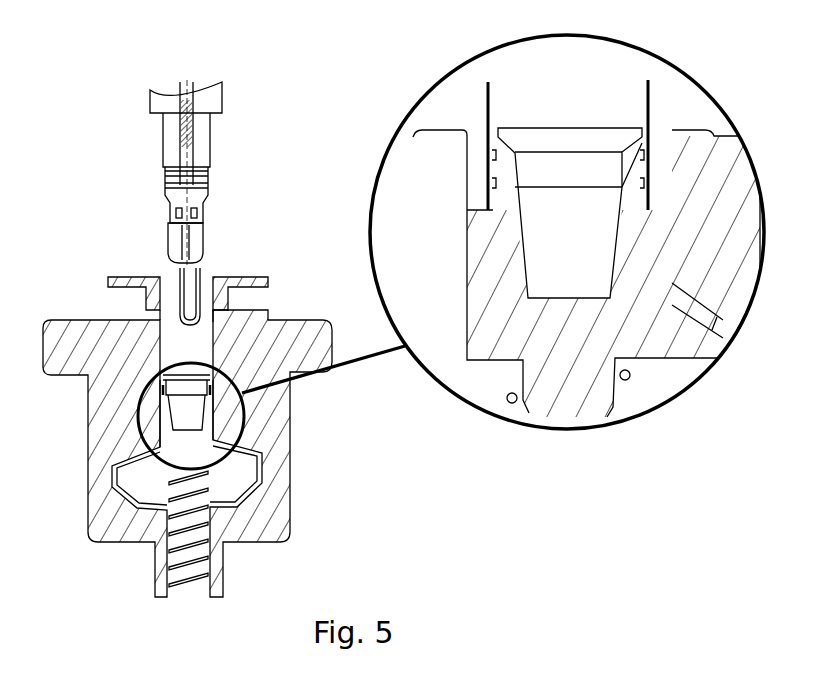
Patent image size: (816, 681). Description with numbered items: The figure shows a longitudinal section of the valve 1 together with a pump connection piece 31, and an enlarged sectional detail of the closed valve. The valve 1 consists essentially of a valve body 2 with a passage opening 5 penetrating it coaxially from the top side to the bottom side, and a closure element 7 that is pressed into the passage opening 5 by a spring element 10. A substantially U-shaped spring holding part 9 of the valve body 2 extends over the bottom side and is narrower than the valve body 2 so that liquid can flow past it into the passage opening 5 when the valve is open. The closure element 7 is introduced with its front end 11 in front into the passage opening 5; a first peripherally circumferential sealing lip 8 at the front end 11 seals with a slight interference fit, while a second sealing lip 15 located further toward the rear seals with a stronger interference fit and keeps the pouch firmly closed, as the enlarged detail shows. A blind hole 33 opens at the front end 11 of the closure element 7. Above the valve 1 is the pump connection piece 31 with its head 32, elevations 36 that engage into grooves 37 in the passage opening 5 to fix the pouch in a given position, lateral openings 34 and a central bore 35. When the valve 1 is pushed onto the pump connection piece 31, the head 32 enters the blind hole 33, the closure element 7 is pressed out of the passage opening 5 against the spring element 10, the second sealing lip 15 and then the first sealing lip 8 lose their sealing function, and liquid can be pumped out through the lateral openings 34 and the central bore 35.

The valve 1 is at (38, 447).
The valve body 2 is at (138, 345).
The passage opening 5 is at (193, 342).
The closure element 7 is at (215, 420).
The first sealing lip 8 is at (655, 132).
The spring holding part 9 is at (280, 469).
The spring element 10 is at (203, 493).
The front end 11 is at (183, 375).
The second sealing lip 15 is at (662, 168).
The pump connection piece 31 is at (167, 178).
The head 32 is at (173, 243).
The blind hole 33 is at (187, 405).
The lateral openings 34 is at (190, 215).
The central bore 35 is at (195, 150).
The elevations 36 is at (176, 122).
The grooves 37 is at (183, 298).